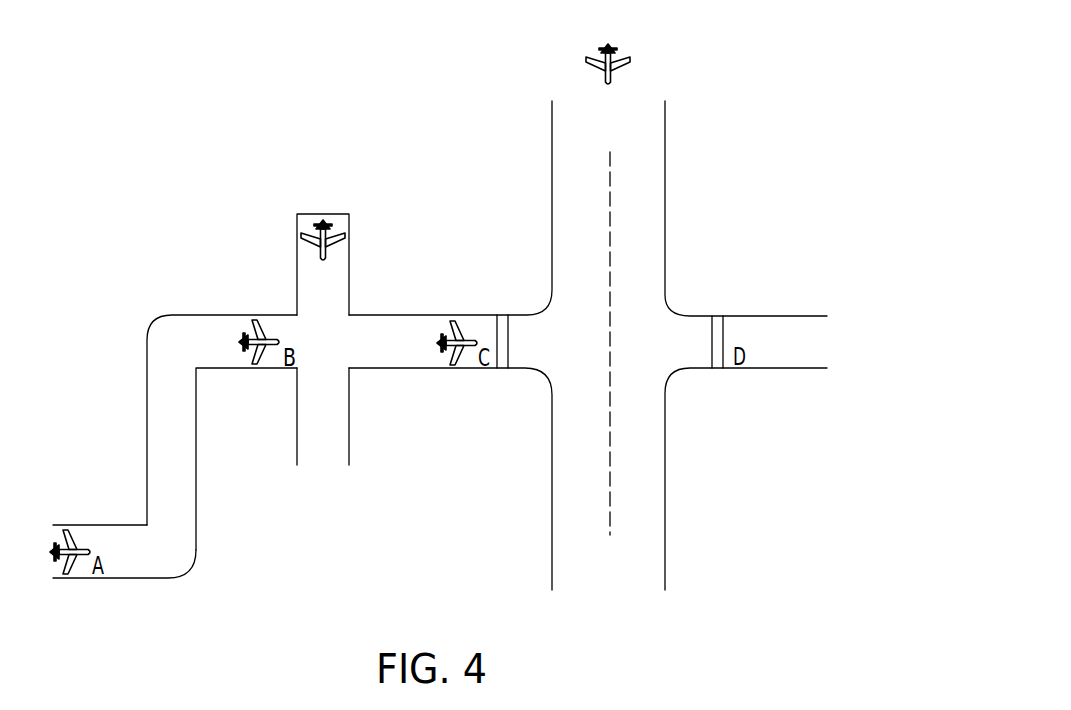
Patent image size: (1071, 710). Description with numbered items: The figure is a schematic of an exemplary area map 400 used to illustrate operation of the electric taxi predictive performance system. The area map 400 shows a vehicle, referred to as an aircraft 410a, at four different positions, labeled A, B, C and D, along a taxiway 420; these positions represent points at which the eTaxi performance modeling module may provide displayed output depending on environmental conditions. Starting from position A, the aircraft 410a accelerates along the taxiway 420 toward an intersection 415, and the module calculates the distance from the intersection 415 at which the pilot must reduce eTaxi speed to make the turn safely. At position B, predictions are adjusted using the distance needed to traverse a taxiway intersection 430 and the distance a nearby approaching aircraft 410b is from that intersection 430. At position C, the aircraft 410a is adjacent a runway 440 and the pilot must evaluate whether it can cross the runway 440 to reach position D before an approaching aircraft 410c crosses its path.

The area map 400 is at (345, 157).
The aircraft 410a is at (68, 528).
The approaching aircraft 410b is at (343, 235).
The approaching aircraft 410c is at (627, 66).
The intersection 415 is at (168, 557).
The taxiway 420 is at (199, 483).
The taxiway intersection 430 is at (330, 372).
The runway 440 is at (642, 319).